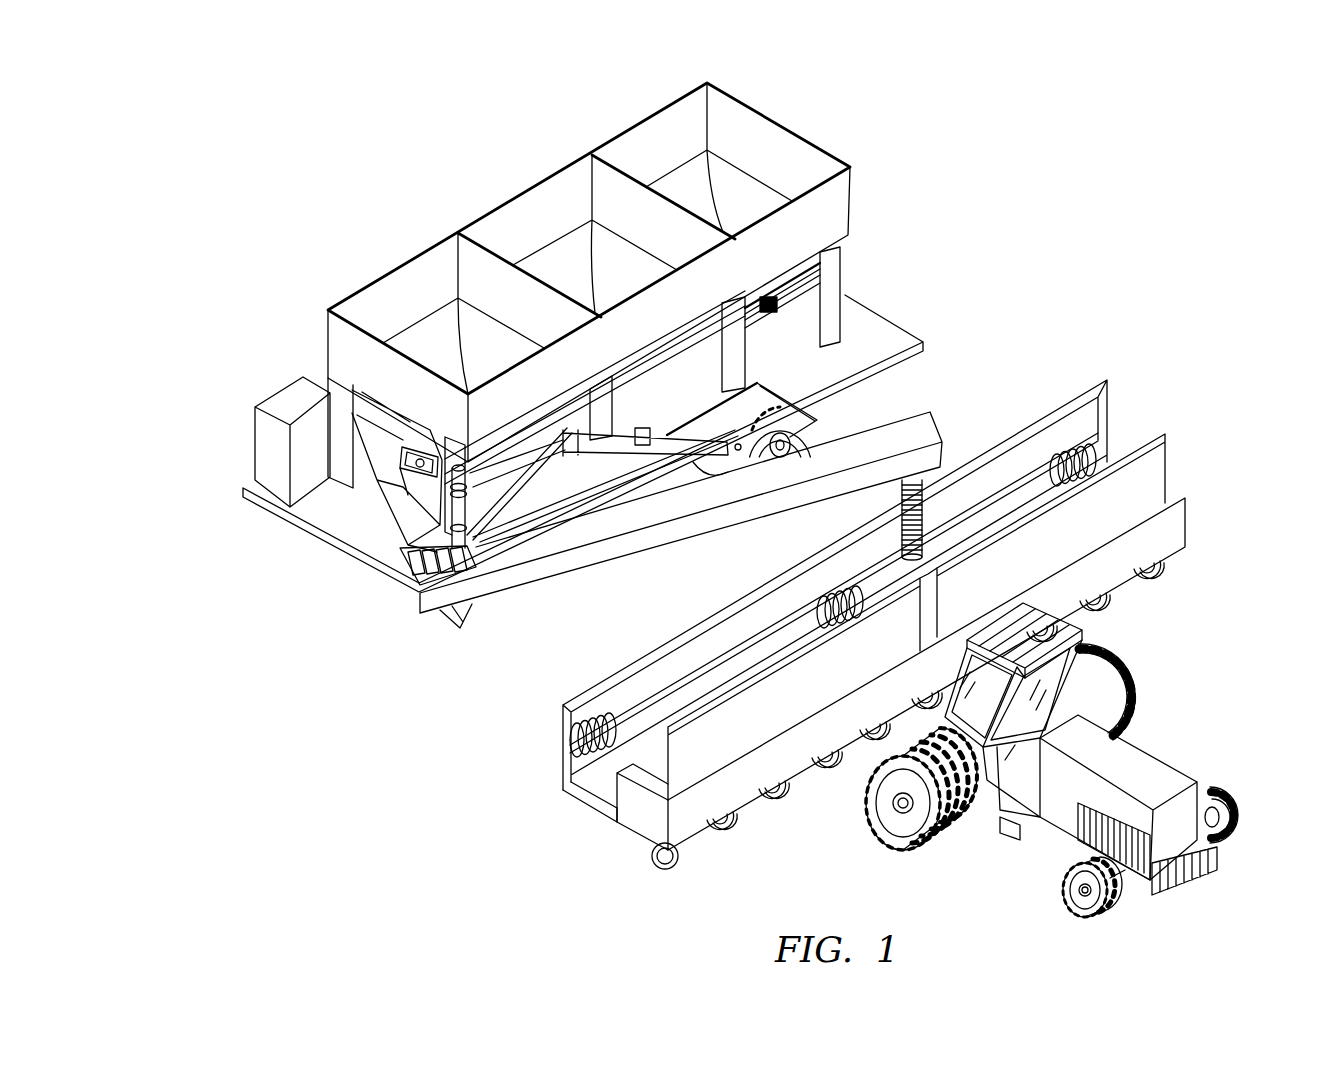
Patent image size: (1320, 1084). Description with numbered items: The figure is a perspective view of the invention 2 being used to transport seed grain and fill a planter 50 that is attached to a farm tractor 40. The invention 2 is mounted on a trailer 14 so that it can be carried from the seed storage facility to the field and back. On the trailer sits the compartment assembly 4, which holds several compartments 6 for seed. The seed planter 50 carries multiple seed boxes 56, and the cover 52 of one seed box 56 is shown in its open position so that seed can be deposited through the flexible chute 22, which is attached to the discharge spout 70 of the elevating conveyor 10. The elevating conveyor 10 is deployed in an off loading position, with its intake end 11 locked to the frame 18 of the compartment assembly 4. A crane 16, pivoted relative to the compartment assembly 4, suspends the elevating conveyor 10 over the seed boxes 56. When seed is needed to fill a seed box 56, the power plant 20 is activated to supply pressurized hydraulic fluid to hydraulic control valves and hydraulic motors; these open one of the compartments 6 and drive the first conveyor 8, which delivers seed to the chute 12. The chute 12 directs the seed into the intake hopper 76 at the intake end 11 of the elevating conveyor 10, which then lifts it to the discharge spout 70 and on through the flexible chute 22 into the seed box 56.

The invention 2 is at (795, 105).
The compartment assembly 4 is at (852, 205).
The compartments 6 is at (540, 220).
The first conveyor 8 is at (668, 368).
The elevating conveyor 10 is at (670, 537).
The intake end 11 is at (473, 590).
The chute 12 is at (378, 480).
The trailer 14 is at (888, 340).
The crane 16 is at (645, 442).
The frame 18 is at (852, 335).
The power plant 20 is at (272, 452).
The flexible chute 22 is at (930, 503).
The farm tractor 40 is at (1150, 745).
The planter 50 is at (1190, 520).
The cover 52 is at (1150, 480).
The seed boxes 56 is at (1173, 490).
The discharge spout 70 is at (947, 477).
The intake hopper 76 is at (403, 590).